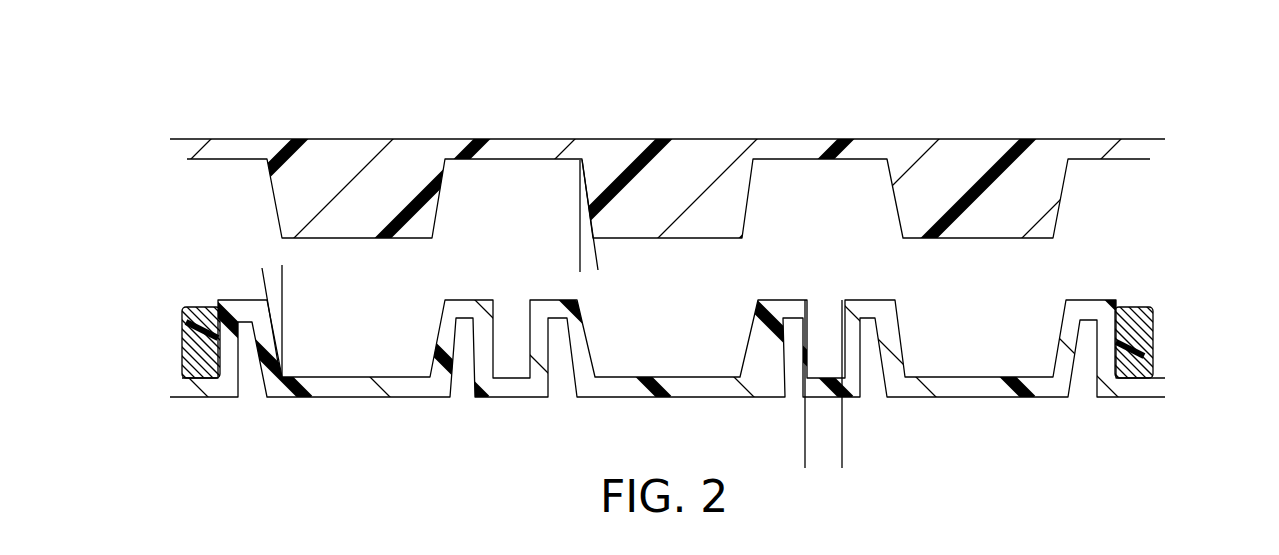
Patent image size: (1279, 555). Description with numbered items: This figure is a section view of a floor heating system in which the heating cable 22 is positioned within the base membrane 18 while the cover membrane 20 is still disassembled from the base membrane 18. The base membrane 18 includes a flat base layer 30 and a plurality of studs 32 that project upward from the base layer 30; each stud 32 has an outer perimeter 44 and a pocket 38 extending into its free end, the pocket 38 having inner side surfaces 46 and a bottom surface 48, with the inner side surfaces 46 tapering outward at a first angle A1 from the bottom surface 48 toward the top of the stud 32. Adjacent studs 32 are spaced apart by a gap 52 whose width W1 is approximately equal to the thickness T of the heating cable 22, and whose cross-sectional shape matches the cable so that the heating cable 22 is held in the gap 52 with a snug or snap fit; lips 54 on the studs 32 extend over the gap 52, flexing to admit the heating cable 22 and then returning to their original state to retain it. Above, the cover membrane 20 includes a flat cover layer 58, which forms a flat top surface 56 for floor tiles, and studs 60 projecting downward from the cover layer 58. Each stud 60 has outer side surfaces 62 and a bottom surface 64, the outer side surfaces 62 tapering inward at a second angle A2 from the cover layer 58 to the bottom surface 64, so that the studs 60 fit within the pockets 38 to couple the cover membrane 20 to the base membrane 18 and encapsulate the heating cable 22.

The base membrane 18 is at (1122, 266).
The cover membrane 20 is at (1143, 108).
The heating cable 22 is at (182, 328).
The base layer 30 is at (353, 387).
The studs 32 is at (182, 307).
The pocket 38 is at (382, 333).
The outer perimeter 44 is at (783, 300).
The inner side surfaces 46 is at (590, 335).
The bottom surface 48 is at (687, 377).
The gap 52 is at (508, 335).
The lips 54 is at (217, 300).
The flat top surface 56 is at (724, 140).
The cover layer 58 is at (521, 147).
The studs 60 is at (422, 172).
The outer side surfaces 62 is at (270, 188).
The bottom surface 64 is at (360, 238).
The first angle A1 is at (228, 283).
The second angle A2 is at (625, 260).
The width W1 is at (755, 460).
The thickness T is at (1067, 363).